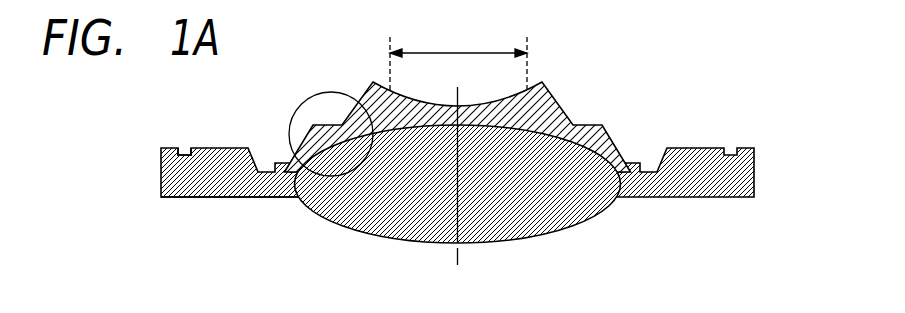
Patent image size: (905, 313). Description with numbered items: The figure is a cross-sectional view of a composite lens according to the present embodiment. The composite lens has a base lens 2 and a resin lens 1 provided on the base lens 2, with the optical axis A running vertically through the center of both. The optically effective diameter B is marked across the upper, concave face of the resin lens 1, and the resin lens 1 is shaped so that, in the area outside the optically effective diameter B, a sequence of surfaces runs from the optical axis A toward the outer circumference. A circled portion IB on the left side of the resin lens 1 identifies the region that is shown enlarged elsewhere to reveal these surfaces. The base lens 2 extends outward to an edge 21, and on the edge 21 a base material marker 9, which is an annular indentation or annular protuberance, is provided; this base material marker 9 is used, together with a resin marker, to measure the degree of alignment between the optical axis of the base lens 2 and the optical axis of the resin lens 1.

The resin lens 1 is at (553, 108).
The base lens 2 is at (745, 177).
The base material marker 9 is at (181, 147).
The edge 21 is at (200, 197).
The portion IB is at (310, 96).
The optical axis A is at (469, 169).
The optically effective diameter B is at (458, 59).